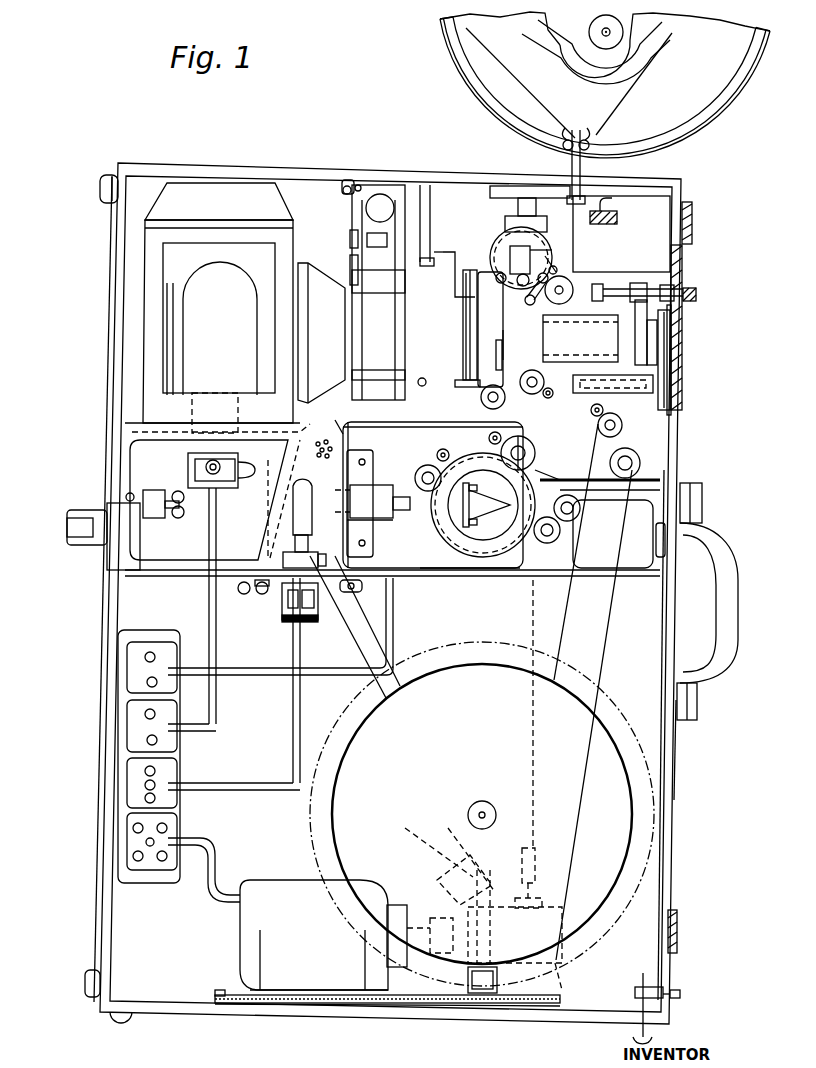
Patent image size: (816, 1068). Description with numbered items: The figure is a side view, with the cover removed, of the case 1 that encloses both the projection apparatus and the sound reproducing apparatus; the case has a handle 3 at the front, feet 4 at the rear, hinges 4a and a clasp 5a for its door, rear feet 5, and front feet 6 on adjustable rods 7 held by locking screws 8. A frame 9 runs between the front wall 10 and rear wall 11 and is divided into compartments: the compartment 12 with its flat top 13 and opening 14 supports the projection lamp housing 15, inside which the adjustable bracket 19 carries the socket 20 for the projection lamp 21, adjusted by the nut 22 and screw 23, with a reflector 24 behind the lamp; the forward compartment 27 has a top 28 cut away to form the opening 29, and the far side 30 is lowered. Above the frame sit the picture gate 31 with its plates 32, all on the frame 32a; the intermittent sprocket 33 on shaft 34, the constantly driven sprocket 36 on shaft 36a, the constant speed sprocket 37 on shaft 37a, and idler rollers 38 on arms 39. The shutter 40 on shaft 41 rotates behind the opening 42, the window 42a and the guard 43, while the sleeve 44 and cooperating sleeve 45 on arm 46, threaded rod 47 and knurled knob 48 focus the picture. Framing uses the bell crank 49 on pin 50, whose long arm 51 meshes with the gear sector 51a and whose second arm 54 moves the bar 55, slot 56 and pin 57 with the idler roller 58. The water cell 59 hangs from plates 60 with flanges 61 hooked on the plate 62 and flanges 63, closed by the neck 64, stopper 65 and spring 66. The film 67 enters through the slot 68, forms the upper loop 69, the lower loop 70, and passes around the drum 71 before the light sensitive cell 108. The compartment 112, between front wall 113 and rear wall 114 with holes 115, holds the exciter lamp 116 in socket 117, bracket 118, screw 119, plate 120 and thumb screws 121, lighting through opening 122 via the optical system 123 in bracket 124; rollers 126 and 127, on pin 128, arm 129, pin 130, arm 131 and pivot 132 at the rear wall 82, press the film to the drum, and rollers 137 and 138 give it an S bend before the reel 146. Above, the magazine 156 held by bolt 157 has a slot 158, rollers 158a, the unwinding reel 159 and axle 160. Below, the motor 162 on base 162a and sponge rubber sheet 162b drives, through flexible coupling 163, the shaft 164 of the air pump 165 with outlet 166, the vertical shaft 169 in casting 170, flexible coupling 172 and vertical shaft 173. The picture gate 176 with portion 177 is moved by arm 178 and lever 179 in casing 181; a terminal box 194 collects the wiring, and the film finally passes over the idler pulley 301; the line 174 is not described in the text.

The case 1 is at (118, 264).
The handle 3 is at (716, 544).
The feet 4 is at (100, 186).
The hinges 4a is at (694, 216).
The feet 5 is at (120, 1018).
The clasp 5a is at (64, 524).
The feet 6 is at (632, 1036).
The rods 7 is at (642, 970).
The locking screws 8 is at (683, 991).
The frame 9 is at (130, 468).
The front wall 10 is at (678, 758).
The rear wall 11 is at (114, 355).
The compartment 12 is at (136, 554).
The flat top 13 is at (116, 426).
The opening 14 is at (146, 468).
The projection lamp housing 15 is at (220, 190).
The adjustable bracket 19 is at (154, 528).
The socket 20 is at (238, 408).
The projection lamp 21 is at (220, 328).
The adjusting nut 22 is at (230, 462).
The adjusting screw 23 is at (132, 488).
The reflector 24 is at (180, 306).
The forward compartment 27 is at (454, 566).
The top 28 is at (425, 392).
The opening 29 is at (596, 500).
The far side 30 is at (613, 534).
The picture gate 31 is at (464, 260).
The plates 32 is at (500, 328).
The frame 32a is at (600, 280).
The intermittent sprocket 33 is at (522, 345).
The shaft 34 is at (532, 372).
The constantly driven sprocket 36 is at (569, 290).
The shaft 36a is at (580, 336).
The constant speed sprocket 37 is at (596, 429).
The shaft 37a is at (594, 412).
The idler rollers 38 is at (558, 268).
The arms 39 is at (500, 312).
The shutter 40 is at (670, 347).
The shaft 41 is at (672, 381).
The opening 42 is at (682, 313).
The plate glass window 42a is at (676, 329).
The guard 43 is at (672, 360).
The sleeve 44 is at (608, 318).
The cooperating sleeve 45 is at (620, 334).
The arm 46 is at (630, 344).
The threaded rod 47 is at (626, 290).
The knurled knob 48 is at (688, 286).
The bell crank 49 is at (559, 255).
The pin 50 is at (531, 245).
The long arm 51 is at (542, 257).
The gear sector 51a is at (537, 208).
The second arm 54 is at (518, 274).
The bar 55 is at (478, 312).
The slot 56 is at (504, 356).
The pin 57 is at (510, 190).
The idler roller 58 is at (480, 400).
The water cell 59 is at (380, 357).
The plates 60 is at (348, 245).
The flange 61 is at (350, 180).
The plate 62 is at (358, 184).
The side flanges 63 is at (344, 192).
The neck 64 is at (350, 264).
The stopper 65 is at (394, 190).
The spring 66 is at (382, 174).
The film 67 is at (578, 238).
The slot 68 is at (588, 176).
The upper loop 69 is at (496, 244).
The lower loop 70 is at (533, 446).
The drum 71 is at (512, 566).
The rear wall 82 is at (430, 566).
The light sensitive cell 108 is at (494, 524).
The compartment 112 is at (302, 438).
The front wall 113 is at (262, 530).
The rear wall 114 is at (314, 548).
The holes 115 is at (334, 434).
The exciter lamp 116 is at (292, 490).
The socket 117 is at (284, 550).
The adjustable bracket 118 is at (282, 604).
The screw 119 is at (320, 604).
The plate 120 is at (266, 592).
The thumb screws 121 is at (240, 590).
The opening 122 is at (326, 452).
The optical system 123 is at (382, 480).
The bracket 124 is at (380, 520).
The roller 126 is at (360, 464).
The roller 127 is at (420, 466).
The pin 128 is at (552, 456).
The arm 129 is at (544, 398).
The pin 130 is at (490, 440).
The arm 131 is at (442, 448).
The pivot 132 is at (464, 456).
The roller 137 is at (548, 534).
The roller 138 is at (572, 492).
The reel 146 is at (656, 832).
The magazine 156 is at (718, 96).
The bolt 157 is at (614, 217).
The slot 158 is at (536, 170).
The rollers 158a is at (574, 128).
The unwinding reel 159 is at (656, 100).
The axle 160 is at (602, 32).
The motor 162 is at (290, 882).
The base 162a is at (218, 986).
The sponge rubber sheet 162b is at (400, 1006).
The flexible coupling 163 is at (430, 906).
The shaft 164 is at (464, 976).
The air pump 165 is at (472, 1010).
The outlet 166 is at (488, 822).
The vertical shaft 169 is at (538, 894).
The casting 170 is at (548, 973).
The flexible coupling 172 is at (536, 856).
The vertical shaft 173 is at (534, 742).
The path circle 174 is at (350, 698).
The picture gate 176 is at (470, 364).
The portion 177 is at (466, 328).
The arm 178 is at (470, 250).
The lever 179 is at (434, 268).
The casing 181 is at (426, 184).
The terminal box 194 is at (148, 630).
The idler pulley 301 is at (624, 454).